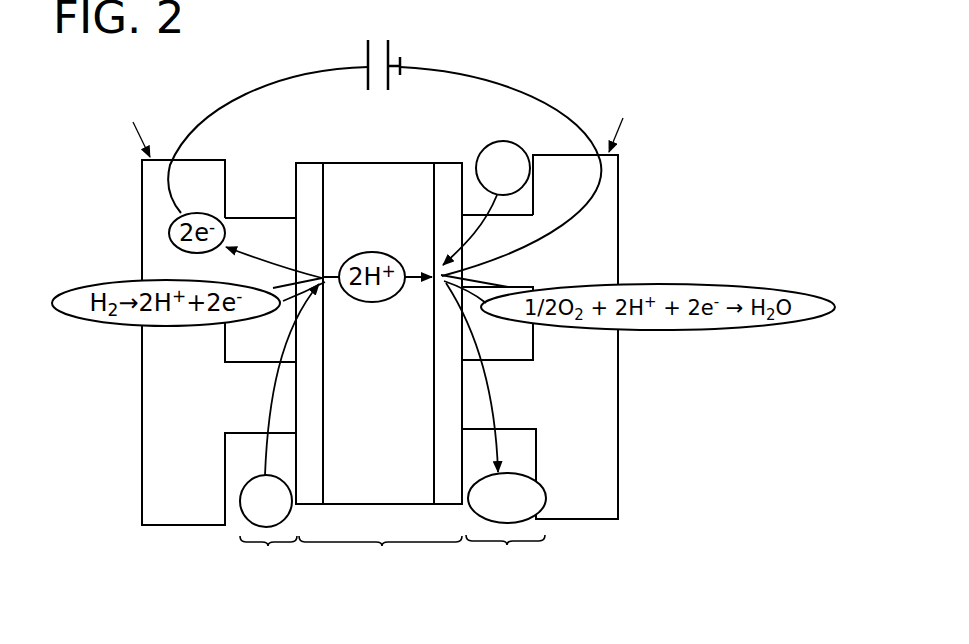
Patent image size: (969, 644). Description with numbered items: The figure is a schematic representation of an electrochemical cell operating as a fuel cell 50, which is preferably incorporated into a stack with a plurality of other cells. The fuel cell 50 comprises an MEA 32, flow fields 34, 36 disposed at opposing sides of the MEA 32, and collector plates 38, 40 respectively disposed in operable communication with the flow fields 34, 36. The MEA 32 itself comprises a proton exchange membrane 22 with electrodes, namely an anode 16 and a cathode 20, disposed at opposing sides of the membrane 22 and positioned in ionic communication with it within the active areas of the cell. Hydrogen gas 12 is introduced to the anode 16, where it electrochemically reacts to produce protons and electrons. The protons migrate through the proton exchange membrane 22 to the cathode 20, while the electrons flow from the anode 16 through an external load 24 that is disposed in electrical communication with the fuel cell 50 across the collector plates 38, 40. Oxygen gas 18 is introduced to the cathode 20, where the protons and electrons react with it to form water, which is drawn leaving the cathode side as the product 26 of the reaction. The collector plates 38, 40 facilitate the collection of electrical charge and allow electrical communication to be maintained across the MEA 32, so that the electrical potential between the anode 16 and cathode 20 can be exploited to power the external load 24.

The hydrogen gas 12 is at (248, 480).
The anode 16 is at (308, 158).
The oxygen gas 18 is at (502, 141).
The cathode 20 is at (447, 158).
The proton exchange membrane 22 is at (394, 158).
The external load 24 is at (433, 67).
The water outlet 26 is at (483, 482).
The MEA 32 is at (382, 554).
The flow field 34 is at (268, 546).
The flow field 36 is at (507, 545).
The collector plate 38 is at (142, 431).
The collector plate 40 is at (618, 397).
The fuel cell 50 is at (635, 66).